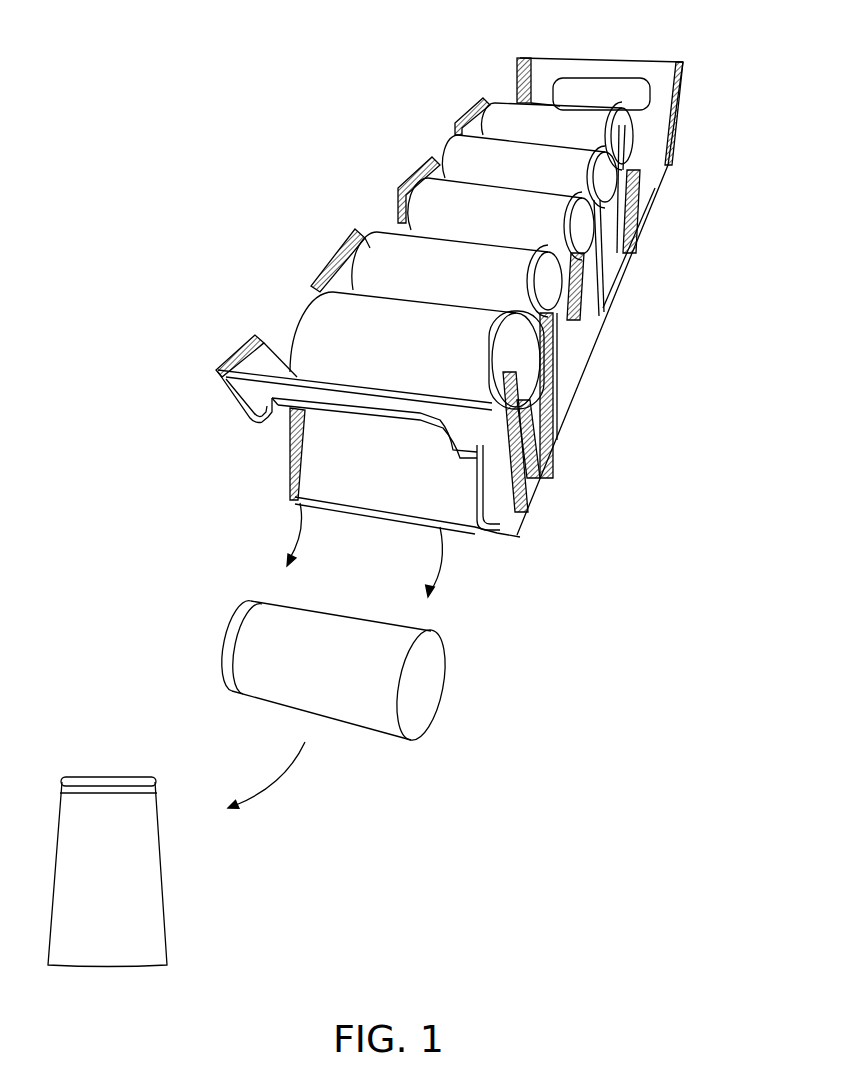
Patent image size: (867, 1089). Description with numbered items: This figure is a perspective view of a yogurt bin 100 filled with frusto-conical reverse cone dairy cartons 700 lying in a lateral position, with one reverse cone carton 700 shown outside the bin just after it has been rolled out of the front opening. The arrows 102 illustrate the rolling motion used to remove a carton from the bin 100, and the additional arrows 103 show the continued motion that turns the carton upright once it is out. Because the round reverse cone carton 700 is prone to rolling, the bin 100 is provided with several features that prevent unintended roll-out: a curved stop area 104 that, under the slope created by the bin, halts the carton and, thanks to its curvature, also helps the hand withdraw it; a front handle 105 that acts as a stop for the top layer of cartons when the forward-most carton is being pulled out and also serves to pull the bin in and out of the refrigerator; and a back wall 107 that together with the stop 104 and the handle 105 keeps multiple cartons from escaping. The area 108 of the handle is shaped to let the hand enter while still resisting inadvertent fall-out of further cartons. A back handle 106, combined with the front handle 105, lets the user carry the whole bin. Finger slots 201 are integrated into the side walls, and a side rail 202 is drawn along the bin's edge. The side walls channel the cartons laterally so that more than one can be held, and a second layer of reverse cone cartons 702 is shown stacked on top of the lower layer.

The yogurt bin 100 is at (246, 41).
The arrows 102 is at (298, 531).
The additional arrows 103 is at (280, 778).
The curved stop area 104 is at (330, 490).
The handle 105 is at (220, 373).
The back handle 106 is at (648, 100).
The back wall 107 is at (684, 70).
The area of the handle 108 is at (250, 418).
The finger slots 201 is at (517, 70).
The side rail 202 is at (623, 278).
The reverse cone carton 700 is at (447, 660).
The reverse cone cartons 702 is at (455, 143).